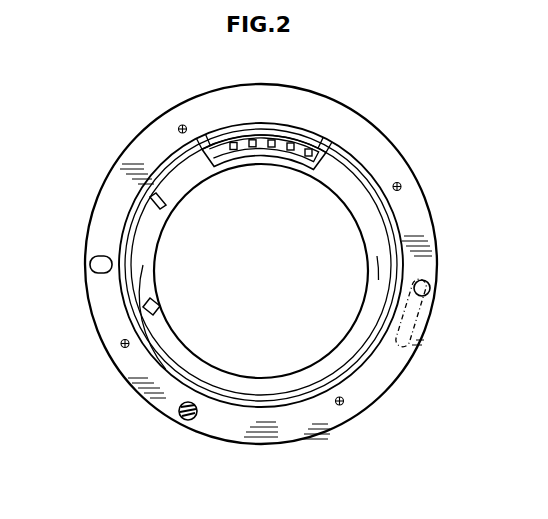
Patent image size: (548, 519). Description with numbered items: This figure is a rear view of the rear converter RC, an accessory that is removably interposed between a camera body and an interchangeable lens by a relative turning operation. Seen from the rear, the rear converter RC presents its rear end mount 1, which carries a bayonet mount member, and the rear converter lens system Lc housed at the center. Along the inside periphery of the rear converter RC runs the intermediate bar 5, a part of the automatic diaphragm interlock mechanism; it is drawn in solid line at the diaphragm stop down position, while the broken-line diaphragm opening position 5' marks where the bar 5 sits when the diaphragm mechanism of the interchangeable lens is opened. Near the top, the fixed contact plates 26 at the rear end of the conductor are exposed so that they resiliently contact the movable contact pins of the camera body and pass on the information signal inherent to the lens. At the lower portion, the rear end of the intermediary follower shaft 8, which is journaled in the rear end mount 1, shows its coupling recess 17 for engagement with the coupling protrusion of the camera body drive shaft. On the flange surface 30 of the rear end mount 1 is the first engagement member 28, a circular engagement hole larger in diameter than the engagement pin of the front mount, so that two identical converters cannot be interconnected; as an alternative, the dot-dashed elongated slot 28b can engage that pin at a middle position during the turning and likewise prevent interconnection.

The rear converter RC is at (404, 137).
The flange surface 30 is at (412, 224).
The rear converter lens system Lc is at (268, 280).
The fixed contact plates 26 is at (265, 168).
The intermediate bar 5 is at (108, 332).
The diaphragm opening position 5' is at (112, 190).
The first engagement member 28 is at (431, 288).
The elongated slot 28b is at (398, 352).
The rear end mount 1 is at (419, 347).
The intermediary follower shaft 8 is at (182, 418).
The coupling recess 17 is at (196, 418).